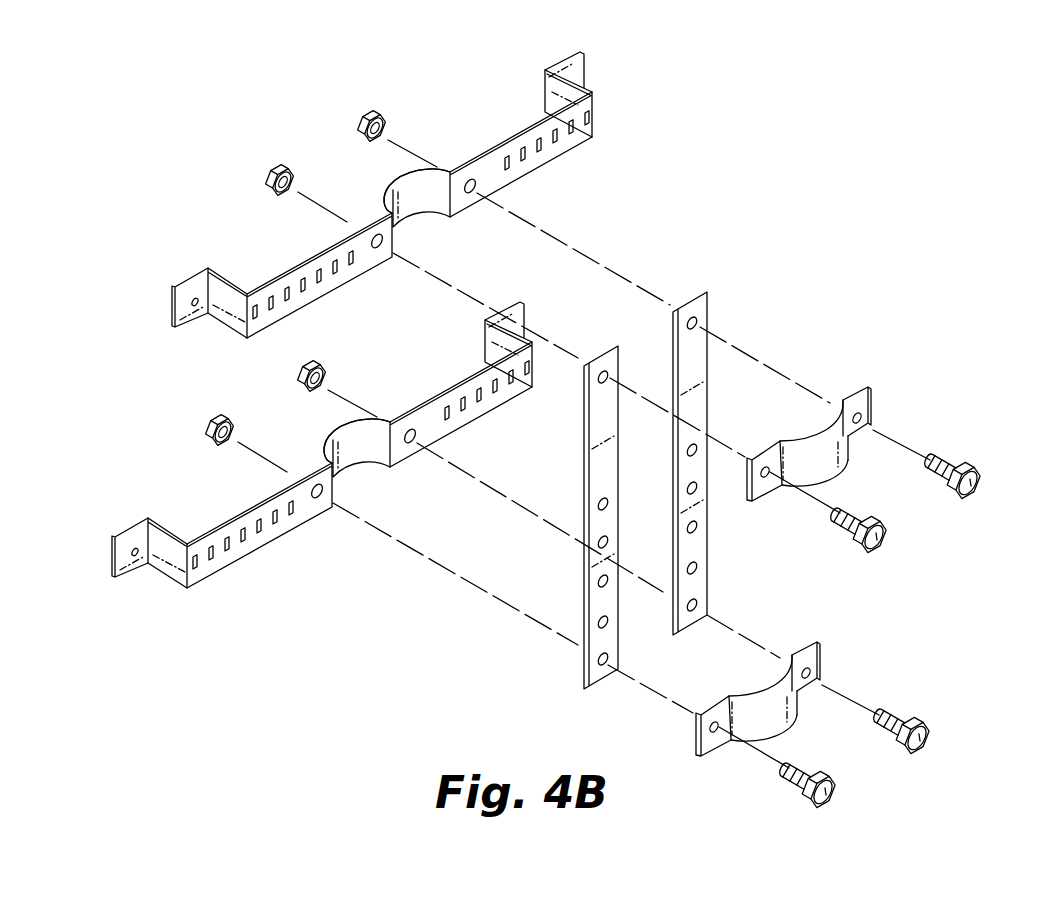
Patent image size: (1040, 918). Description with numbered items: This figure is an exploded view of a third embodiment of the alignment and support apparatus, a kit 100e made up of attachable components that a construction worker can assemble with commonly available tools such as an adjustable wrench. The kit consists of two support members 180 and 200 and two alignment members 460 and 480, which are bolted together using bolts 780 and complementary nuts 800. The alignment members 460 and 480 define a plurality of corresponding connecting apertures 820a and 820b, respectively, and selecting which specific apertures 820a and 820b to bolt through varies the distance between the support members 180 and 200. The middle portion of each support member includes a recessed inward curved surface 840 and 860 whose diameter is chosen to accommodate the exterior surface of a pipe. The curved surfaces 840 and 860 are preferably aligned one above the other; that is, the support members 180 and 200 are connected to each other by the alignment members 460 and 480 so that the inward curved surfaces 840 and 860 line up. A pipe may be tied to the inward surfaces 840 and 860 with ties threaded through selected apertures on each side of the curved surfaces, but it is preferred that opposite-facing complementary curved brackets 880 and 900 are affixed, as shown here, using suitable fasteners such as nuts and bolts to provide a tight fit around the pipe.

The alignment and support apparatus kit 100e is at (931, 151).
The support member 180 is at (507, 139).
The support member 200 is at (447, 386).
The alignment member 460 is at (583, 460).
The alignment member 480 is at (707, 313).
The bolt 780 is at (951, 491).
The nut 800 is at (360, 115).
The connecting aperture 820a is at (600, 583).
The connecting aperture 820b is at (698, 528).
The recessed inward curved surface 840 is at (420, 205).
The recessed inward curved surface 860 is at (357, 453).
The complementary curved bracket 880 is at (820, 431).
The complementary curved bracket 900 is at (760, 688).